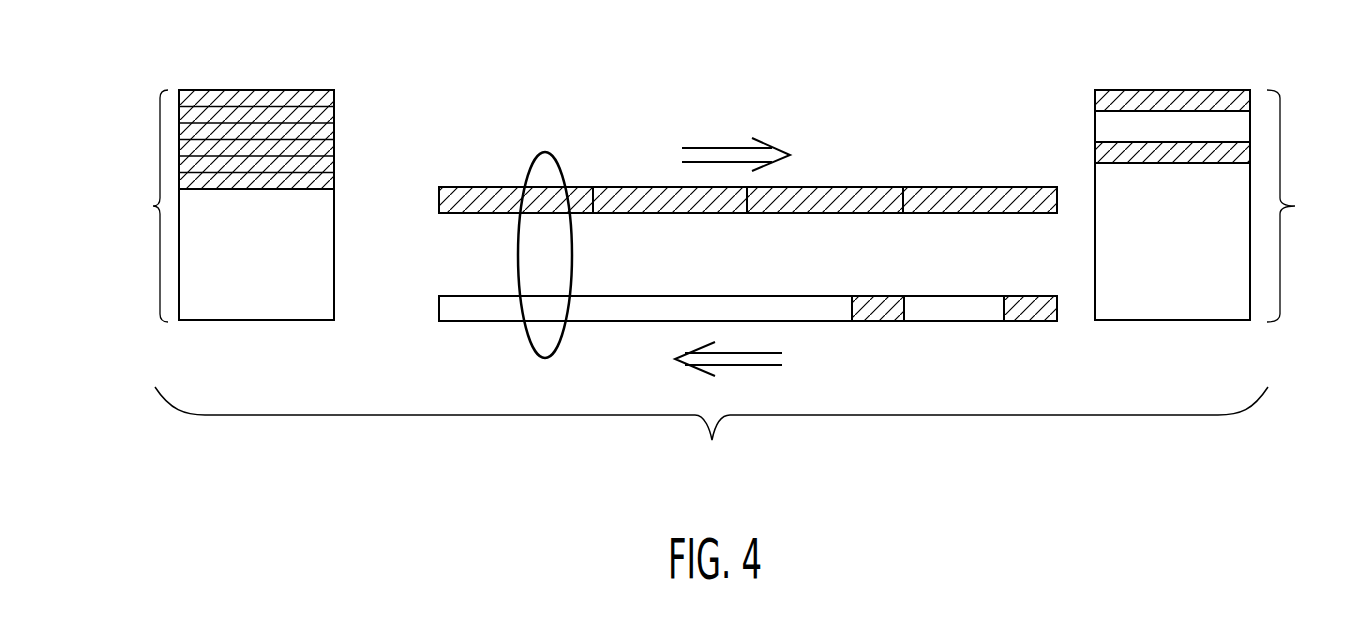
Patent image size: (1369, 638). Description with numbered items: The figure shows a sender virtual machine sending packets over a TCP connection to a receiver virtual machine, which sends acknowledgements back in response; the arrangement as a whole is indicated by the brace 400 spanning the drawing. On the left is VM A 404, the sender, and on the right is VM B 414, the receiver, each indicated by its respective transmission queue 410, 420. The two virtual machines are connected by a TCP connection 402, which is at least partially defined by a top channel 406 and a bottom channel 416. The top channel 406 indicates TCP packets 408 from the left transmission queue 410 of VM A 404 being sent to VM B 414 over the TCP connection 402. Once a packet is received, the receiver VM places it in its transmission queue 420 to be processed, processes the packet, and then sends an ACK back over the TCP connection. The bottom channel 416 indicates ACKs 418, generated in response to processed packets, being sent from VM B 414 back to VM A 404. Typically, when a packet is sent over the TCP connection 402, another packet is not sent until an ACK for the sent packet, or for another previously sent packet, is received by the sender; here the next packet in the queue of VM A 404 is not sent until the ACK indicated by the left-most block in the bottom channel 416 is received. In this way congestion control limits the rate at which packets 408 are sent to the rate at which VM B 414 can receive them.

The virtual machine migration system 400 is at (711, 432).
The TCP connection 402 is at (555, 152).
The sender VM (VM A) 404 is at (183, 66).
The top channel 406 is at (439, 187).
The TCP packets 408 is at (334, 98).
The transmission queue 410 is at (135, 206).
The receiver VM (VM B) 414 is at (1250, 67).
The bottom channel 416 is at (1057, 295).
The ACKs 418 is at (887, 295).
The transmission queue 420 is at (1301, 206).